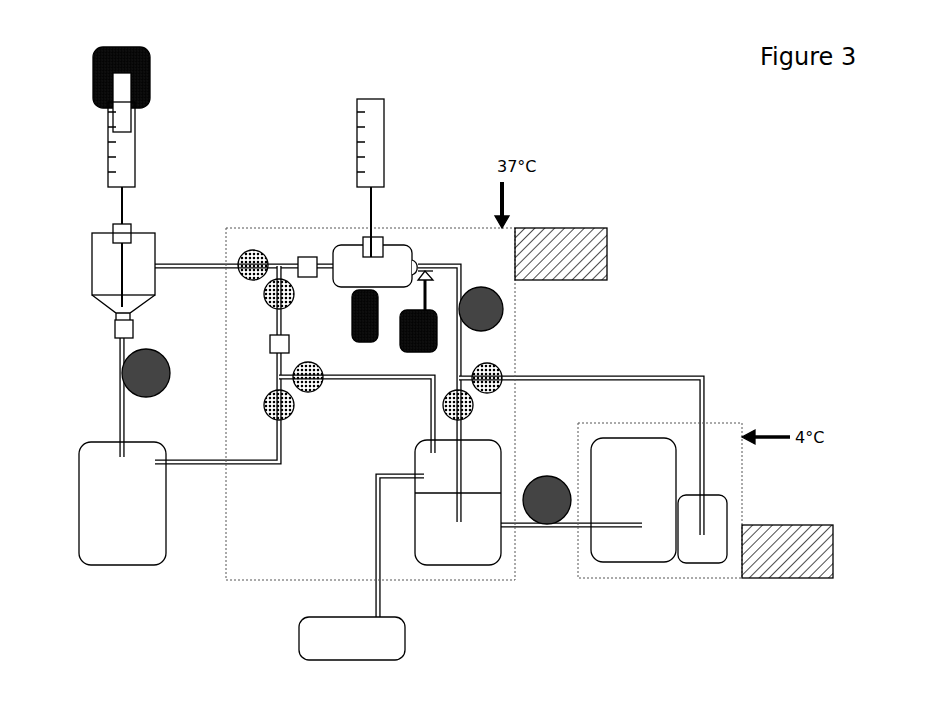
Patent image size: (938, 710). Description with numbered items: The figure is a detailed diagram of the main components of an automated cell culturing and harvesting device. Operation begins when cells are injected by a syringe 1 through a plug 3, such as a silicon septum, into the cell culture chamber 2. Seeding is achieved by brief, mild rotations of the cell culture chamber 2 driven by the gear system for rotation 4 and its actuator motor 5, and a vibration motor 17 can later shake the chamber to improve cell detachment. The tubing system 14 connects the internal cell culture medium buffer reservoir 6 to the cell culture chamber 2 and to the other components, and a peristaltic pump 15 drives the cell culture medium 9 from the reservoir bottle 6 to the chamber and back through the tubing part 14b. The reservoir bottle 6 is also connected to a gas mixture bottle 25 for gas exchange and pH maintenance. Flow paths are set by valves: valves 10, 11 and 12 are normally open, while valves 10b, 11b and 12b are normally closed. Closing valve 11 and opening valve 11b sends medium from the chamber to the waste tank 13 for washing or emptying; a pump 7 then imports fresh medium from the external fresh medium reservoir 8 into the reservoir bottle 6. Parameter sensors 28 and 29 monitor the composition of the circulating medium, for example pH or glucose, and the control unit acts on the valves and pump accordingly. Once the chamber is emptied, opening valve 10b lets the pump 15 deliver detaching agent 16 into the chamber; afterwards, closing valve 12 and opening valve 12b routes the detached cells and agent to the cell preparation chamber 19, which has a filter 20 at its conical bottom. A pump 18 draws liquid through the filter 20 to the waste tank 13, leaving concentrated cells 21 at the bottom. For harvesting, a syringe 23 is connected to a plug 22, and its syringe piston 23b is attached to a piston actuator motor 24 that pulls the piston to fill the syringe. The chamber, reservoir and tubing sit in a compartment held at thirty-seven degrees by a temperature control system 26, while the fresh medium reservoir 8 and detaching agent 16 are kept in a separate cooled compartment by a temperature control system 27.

The syringe 1 is at (387, 105).
The cell culture chamber 2 is at (399, 248).
The plug 3 is at (362, 240).
The gear system for rotation 4 is at (428, 268).
The actuator motor 5 is at (412, 355).
The internal cell culture medium buffer reservoir 6 is at (478, 567).
The pump 7 is at (546, 476).
The external fresh medium reservoir 8 is at (632, 558).
The cell culture medium 9 is at (440, 565).
The normally-open valve 10 is at (443, 410).
The normally-closed valve 10b is at (503, 374).
The normally-open valve 11 is at (310, 395).
The normally-closed valve 11b is at (264, 405).
The normally-open valve 12 is at (264, 294).
The normally-closed valve 12b is at (256, 250).
The waste tank 13 is at (122, 558).
The tubing system 14 is at (455, 475).
The tubing part 14b is at (413, 453).
The peristaltic pump 15 is at (503, 306).
The detaching agent 16 is at (704, 565).
The vibration motor 17 is at (362, 345).
The pump 18 is at (122, 374).
The cell preparation chamber 19 is at (100, 245).
The filter 20 is at (114, 330).
The concentrated cells 21 is at (115, 297).
The plug 22 is at (113, 228).
The syringe 23 is at (137, 158).
The syringe piston 23b is at (113, 90).
The piston actuator motor 24 is at (152, 88).
The gas mixture bottle 25 is at (297, 650).
The temperature control system 26 is at (609, 248).
The temperature control system 27 is at (788, 580).
The parameter sensor 28 is at (270, 344).
The parameter sensor 29 is at (306, 257).